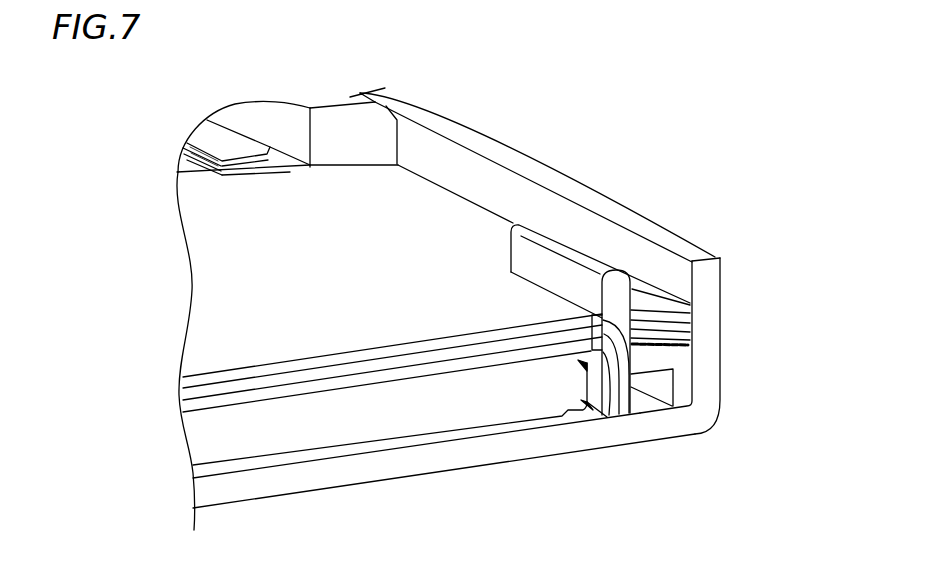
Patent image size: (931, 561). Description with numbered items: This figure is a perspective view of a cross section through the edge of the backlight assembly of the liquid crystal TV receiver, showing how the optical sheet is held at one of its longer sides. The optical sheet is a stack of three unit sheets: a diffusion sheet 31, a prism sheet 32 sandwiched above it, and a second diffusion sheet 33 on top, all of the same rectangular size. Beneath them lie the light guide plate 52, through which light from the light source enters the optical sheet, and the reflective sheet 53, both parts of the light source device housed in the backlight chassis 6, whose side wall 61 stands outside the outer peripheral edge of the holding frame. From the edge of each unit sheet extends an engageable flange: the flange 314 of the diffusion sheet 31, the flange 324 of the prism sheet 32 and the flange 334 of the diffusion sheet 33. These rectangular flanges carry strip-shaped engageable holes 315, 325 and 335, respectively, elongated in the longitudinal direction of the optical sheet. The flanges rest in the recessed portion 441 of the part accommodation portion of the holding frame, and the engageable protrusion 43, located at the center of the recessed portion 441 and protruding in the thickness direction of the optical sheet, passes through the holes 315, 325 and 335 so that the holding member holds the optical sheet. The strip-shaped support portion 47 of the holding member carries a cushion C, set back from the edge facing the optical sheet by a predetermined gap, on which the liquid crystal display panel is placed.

The cushion C is at (207, 133).
The support portion 47 is at (203, 170).
The side wall 61 is at (675, 240).
The engageable protrusion 43 is at (570, 248).
The backlight chassis 6 is at (722, 382).
The diffusion sheet 33 is at (180, 378).
The prism sheet 32 is at (180, 389).
The diffusion sheet 31 is at (180, 400).
The light guide plate 52 is at (203, 445).
The reflective sheet 53 is at (197, 473).
The engageable flange 334 is at (692, 305).
The engageable flange 324 is at (690, 322).
The engageable flange 314 is at (690, 333).
The recessed portion 441 is at (690, 344).
The engageable hole 315 is at (597, 410).
The engageable hole 335 is at (631, 415).
The engageable hole 325 is at (620, 398).